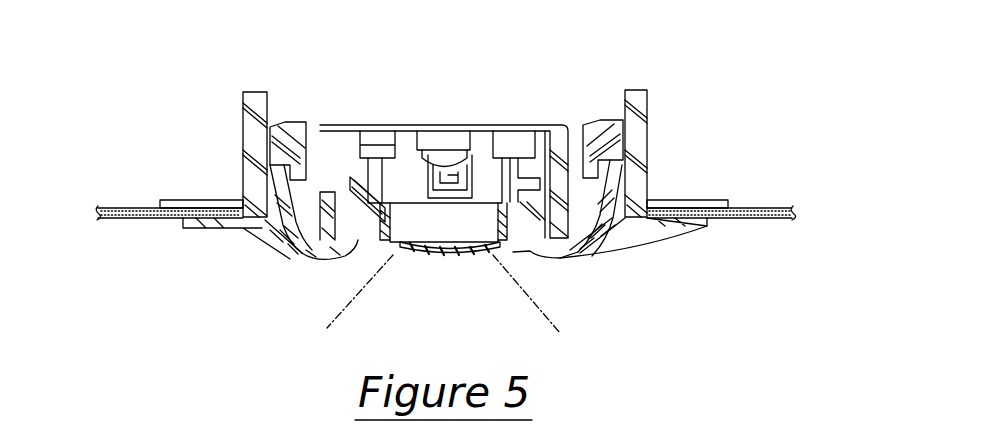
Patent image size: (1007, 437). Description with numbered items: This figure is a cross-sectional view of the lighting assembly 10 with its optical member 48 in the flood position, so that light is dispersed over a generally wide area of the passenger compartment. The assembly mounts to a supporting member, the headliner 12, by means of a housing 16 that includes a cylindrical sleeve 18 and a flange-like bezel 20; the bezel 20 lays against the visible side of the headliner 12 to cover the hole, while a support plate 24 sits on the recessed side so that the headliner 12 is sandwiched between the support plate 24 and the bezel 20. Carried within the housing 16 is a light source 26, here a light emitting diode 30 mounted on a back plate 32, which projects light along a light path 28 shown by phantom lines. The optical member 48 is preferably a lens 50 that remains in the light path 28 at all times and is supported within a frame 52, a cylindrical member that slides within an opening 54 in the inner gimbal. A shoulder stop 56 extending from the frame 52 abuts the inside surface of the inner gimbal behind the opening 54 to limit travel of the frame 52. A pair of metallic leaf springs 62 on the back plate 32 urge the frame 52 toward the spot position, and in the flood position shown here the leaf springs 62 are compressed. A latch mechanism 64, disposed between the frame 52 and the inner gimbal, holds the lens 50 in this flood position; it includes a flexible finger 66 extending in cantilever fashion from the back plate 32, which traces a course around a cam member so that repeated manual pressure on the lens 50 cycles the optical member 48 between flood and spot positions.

The lighting assembly 10 is at (722, 66).
The headliner 12 is at (115, 219).
The housing 16 is at (241, 90).
The cylindrical sleeve 18 is at (648, 120).
The bezel 20 is at (677, 231).
The support plate 24 is at (171, 199).
The light source 26 is at (425, 162).
The light path 28 is at (343, 315).
The light emitting diode 30 is at (445, 152).
The back plate 32 is at (334, 125).
The optical member 48 is at (514, 256).
The lens 50 is at (418, 256).
The frame 52 is at (372, 252).
The opening 54 is at (512, 248).
The shoulder stop 56 is at (382, 233).
The leaf springs 62 is at (365, 152).
The latch mechanism 64 is at (462, 176).
The flexible finger 66 is at (452, 197).